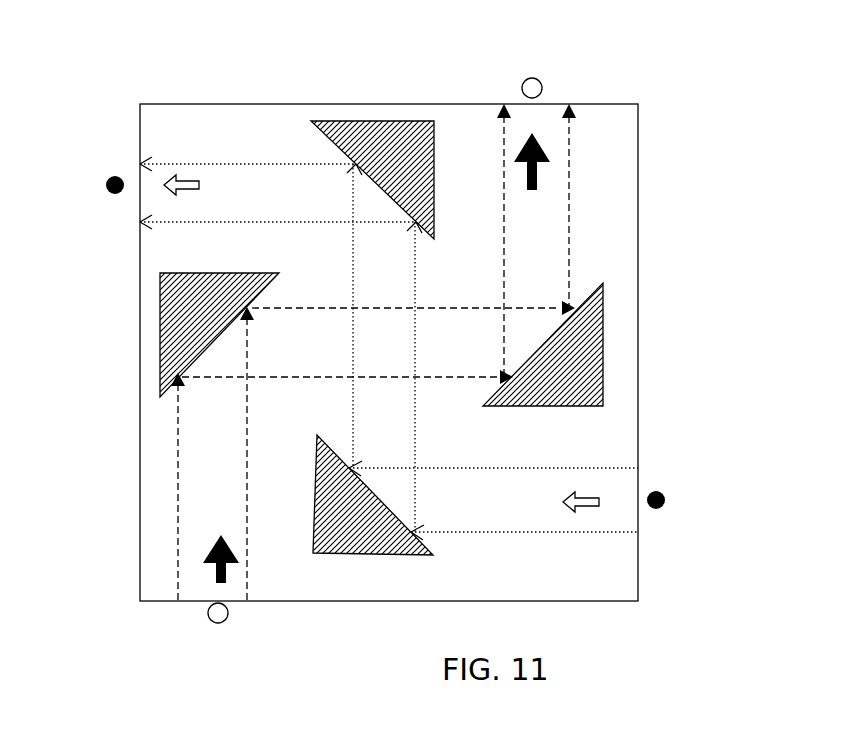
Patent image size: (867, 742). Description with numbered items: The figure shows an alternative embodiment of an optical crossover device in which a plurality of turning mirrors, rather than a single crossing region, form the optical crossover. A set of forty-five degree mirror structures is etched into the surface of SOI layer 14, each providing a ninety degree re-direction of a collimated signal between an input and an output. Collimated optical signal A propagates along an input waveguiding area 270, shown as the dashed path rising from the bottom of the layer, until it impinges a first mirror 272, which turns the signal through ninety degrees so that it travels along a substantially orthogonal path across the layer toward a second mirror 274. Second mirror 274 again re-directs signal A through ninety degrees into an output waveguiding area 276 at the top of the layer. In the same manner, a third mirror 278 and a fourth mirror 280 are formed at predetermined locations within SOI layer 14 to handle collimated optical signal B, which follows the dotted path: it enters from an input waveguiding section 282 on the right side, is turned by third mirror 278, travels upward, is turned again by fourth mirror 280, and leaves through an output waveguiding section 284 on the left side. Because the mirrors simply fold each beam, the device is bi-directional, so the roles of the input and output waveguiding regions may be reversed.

The SOI layer 14 is at (608, 249).
The input waveguiding area 270 is at (197, 514).
The first mirror 272 is at (180, 323).
The second mirror 274 is at (582, 370).
The output waveguiding area 276 is at (557, 193).
The third mirror 278 is at (338, 553).
The fourth mirror 280 is at (406, 140).
The input waveguiding section 282 is at (588, 515).
The output waveguiding section 284 is at (225, 183).